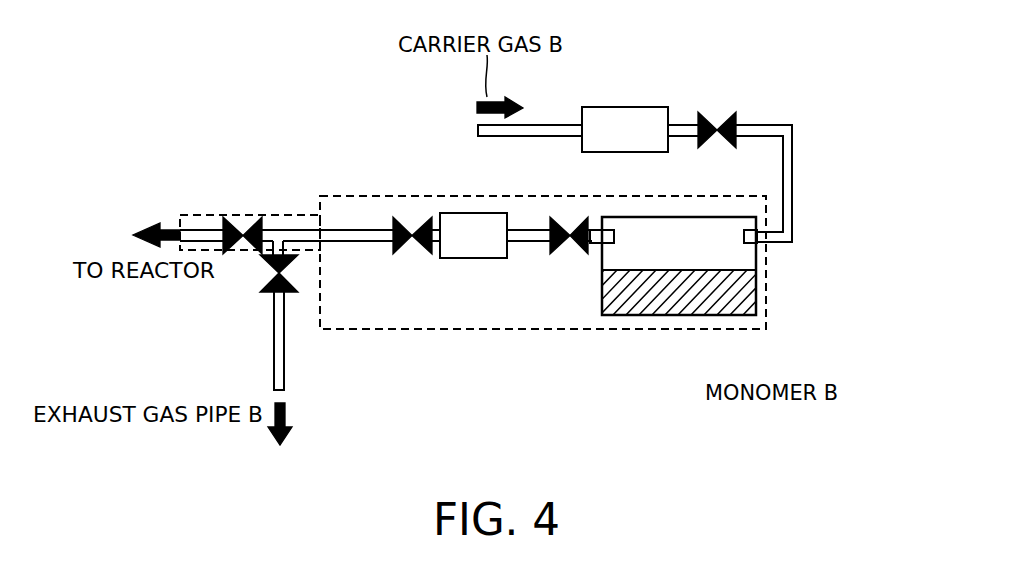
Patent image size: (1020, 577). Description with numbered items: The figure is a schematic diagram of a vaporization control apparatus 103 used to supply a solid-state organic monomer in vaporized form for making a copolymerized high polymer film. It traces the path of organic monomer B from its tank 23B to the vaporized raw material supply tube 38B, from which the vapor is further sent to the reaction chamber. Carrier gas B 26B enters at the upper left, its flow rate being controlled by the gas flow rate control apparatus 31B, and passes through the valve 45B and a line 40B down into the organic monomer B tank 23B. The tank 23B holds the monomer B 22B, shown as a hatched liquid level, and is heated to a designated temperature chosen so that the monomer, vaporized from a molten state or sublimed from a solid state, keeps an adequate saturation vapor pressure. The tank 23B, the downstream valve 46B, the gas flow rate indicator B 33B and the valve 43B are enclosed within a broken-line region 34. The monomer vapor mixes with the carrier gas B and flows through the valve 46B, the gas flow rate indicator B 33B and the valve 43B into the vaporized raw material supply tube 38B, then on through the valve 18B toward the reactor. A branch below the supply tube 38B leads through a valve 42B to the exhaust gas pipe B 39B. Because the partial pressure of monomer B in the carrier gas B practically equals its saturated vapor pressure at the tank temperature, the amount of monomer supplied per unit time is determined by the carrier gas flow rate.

The monomer supply system B 103 is at (590, 70).
The thermostatic chamber 34 is at (367, 195).
The carrier gas B 26B is at (502, 130).
The gas flow rate control apparatus 31B is at (637, 107).
The valve 45B is at (722, 113).
The carrier gas introduction pipe B 40B is at (785, 125).
The organic monomer B tank 23B is at (637, 320).
The monomer B 22B is at (730, 305).
The valve 46B is at (570, 216).
The gas flow rate indicator B 33B is at (482, 258).
The valve 43B is at (408, 254).
The vaporized raw material supply tube 38B is at (297, 230).
The valve 18B is at (233, 226).
The valve 42B is at (263, 282).
The exhaust gas pipe B 39B is at (280, 352).